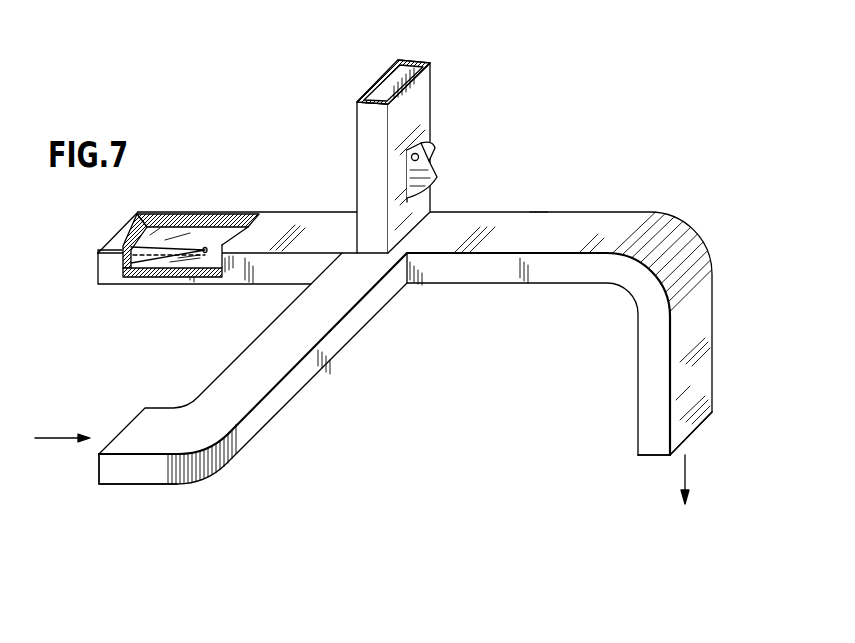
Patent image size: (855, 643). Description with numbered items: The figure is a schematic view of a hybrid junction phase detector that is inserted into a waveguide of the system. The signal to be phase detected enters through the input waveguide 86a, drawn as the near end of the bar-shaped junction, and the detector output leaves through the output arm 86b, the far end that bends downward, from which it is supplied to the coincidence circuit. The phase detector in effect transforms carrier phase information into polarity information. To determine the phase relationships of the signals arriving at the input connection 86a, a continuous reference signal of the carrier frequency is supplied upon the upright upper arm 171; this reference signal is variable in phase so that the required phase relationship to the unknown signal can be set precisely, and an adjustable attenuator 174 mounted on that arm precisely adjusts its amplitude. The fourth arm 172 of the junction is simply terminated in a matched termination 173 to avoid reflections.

The upper arm 171 is at (367, 130).
The fourth arm 172 is at (275, 220).
The matched termination 173 is at (160, 222).
The adjustable attenuator 174 is at (423, 168).
The input waveguide 86a is at (123, 473).
The output arm 86b is at (652, 423).